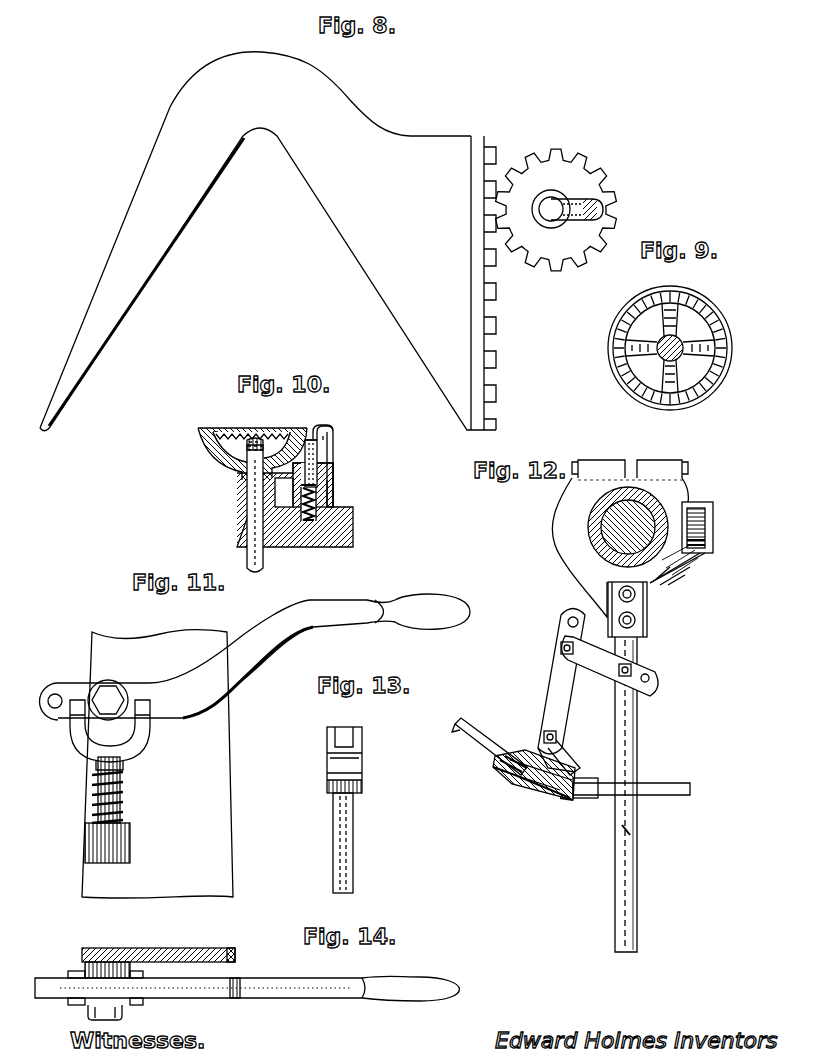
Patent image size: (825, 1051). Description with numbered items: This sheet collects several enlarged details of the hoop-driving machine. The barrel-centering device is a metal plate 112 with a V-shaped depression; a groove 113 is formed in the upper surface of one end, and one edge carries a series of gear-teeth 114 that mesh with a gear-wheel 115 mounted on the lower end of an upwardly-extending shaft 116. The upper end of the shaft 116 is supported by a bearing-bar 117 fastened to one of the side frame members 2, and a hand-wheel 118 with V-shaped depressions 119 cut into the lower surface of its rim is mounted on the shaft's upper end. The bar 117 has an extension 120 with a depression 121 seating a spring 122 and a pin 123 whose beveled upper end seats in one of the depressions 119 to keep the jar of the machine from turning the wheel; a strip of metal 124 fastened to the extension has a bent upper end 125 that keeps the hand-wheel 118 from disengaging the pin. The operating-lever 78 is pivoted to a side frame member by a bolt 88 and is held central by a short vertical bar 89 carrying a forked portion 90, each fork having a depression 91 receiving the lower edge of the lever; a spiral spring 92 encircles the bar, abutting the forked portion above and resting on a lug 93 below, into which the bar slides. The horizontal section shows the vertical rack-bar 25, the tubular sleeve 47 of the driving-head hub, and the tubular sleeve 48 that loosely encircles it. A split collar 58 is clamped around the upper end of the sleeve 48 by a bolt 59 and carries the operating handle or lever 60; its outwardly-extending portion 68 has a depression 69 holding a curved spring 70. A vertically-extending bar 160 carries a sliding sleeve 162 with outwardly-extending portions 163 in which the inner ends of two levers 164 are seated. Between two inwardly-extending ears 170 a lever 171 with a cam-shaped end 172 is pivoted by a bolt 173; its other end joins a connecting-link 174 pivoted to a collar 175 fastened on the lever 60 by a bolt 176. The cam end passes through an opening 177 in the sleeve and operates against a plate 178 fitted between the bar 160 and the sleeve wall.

In FIG. 11, the side frame member 2 is at (208, 856).
In FIG. 14, the side frame member 2 is at (187, 953).
In FIG. 12, the vertical rack-bar 25 is at (665, 513).
In FIG. 12, the tubular sleeve 47 is at (592, 497).
In FIG. 12, the tubular sleeve 48 is at (645, 563).
In FIG. 12, the split collar 58 is at (570, 535).
In FIG. 12, the bolt 59 is at (633, 470).
In FIG. 12, the operating handle or lever 60 is at (628, 746).
In FIG. 12, the outwardly-extending portion 68 is at (713, 503).
In FIG. 12, the depression 69 is at (713, 547).
In FIG. 12, the spring 70 is at (706, 526).
In FIG. 11, the operating-lever 78 is at (207, 688).
In FIG. 14, the operating-lever 78 is at (135, 968).
In FIG. 11, the bolt 88 is at (112, 700).
In FIG. 14, the bolt 88 is at (122, 1008).
In FIG. 11, the short vertical bar 89 is at (125, 787).
In FIG. 13, the short vertical bar 89 is at (345, 827).
In FIG. 11, the forked portion 90 is at (137, 735).
In FIG. 13, the forked portion 90 is at (346, 758).
In FIG. 14, the forked portion 90 is at (130, 973).
In FIG. 13, the depression 91 is at (344, 736).
In FIG. 11, the spiral spring 92 is at (120, 815).
In FIG. 11, the lug 93 is at (118, 848).
In FIG. 14, the lug 93 is at (285, 1011).
In FIG. 8, the metal plate 112 is at (118, 270).
In FIG. 8, the groove 113 is at (472, 330).
In FIG. 8, the gear-teeth 114 is at (498, 292).
In FIG. 8, the gear-wheel 115 is at (580, 180).
In FIG. 8, the shaft 116 is at (605, 208).
In FIG. 9, the shaft 116 is at (707, 362).
In FIG. 10, the shaft 116 is at (248, 503).
In FIG. 10, the bearing-bar 117 is at (353, 528).
In FIG. 9, the hand-wheel 118 is at (680, 316).
In FIG. 10, the hand-wheel 118 is at (200, 432).
In FIG. 9, the V-shaped depressions 119 is at (618, 318).
In FIG. 10, the V-shaped depressions 119 is at (200, 440).
In FIG. 10, the extension 120 is at (323, 477).
In FIG. 10, the depression 121 is at (330, 501).
In FIG. 10, the spring 122 is at (305, 522).
In FIG. 10, the pin 123 is at (318, 457).
In FIG. 10, the strip of metal 124 is at (319, 437).
In FIG. 10, the bent upper end 125 is at (318, 426).
In FIG. 12, the vertically-extending bar 160 is at (563, 784).
In FIG. 12, the sleeve 162 is at (627, 832).
In FIG. 12, the outwardly-extending portions 163 is at (505, 758).
In FIG. 12, the lever 164 is at (469, 724).
In FIG. 12, the inwardly-extending lugs or ears 170 is at (567, 750).
In FIG. 12, the lever 171 is at (557, 692).
In FIG. 12, the cam-shaped end 172 is at (512, 782).
In FIG. 12, the bolt 173 is at (560, 737).
In FIG. 12, the connecting-link 174 is at (597, 653).
In FIG. 12, the collar 175 is at (655, 660).
In FIG. 12, the bolt 176 is at (650, 680).
In FIG. 12, the opening 177 is at (598, 775).
In FIG. 12, the plate 178 is at (567, 802).